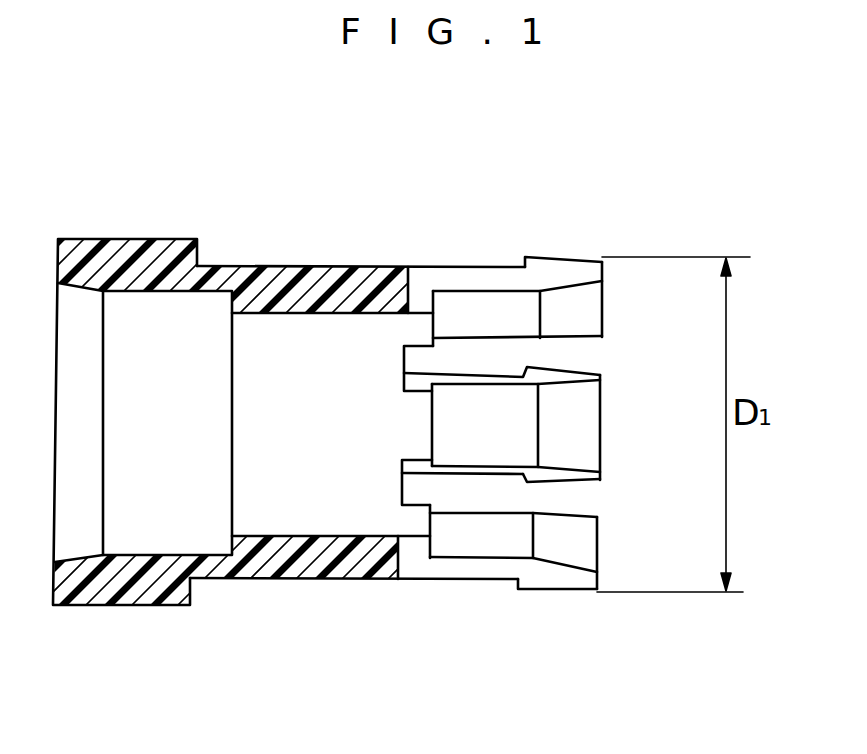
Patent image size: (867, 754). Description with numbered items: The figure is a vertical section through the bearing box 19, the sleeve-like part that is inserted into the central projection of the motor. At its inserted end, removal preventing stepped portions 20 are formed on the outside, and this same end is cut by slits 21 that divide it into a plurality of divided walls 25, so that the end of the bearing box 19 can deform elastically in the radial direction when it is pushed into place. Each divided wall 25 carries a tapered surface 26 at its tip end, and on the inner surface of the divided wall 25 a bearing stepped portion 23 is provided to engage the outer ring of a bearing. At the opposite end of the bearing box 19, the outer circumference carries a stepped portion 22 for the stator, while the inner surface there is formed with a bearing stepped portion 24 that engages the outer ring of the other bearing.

The bearing box 19 is at (380, 197).
The removal preventing stepped portion 20 is at (521, 255).
The slit 21 is at (577, 355).
The stepped portion for the stator 22 is at (196, 259).
The bearing stepped portion 23 is at (440, 297).
The bearing stepped portion 24 is at (232, 402).
The divided wall 25 is at (595, 302).
The tapered surface 26 is at (596, 258).